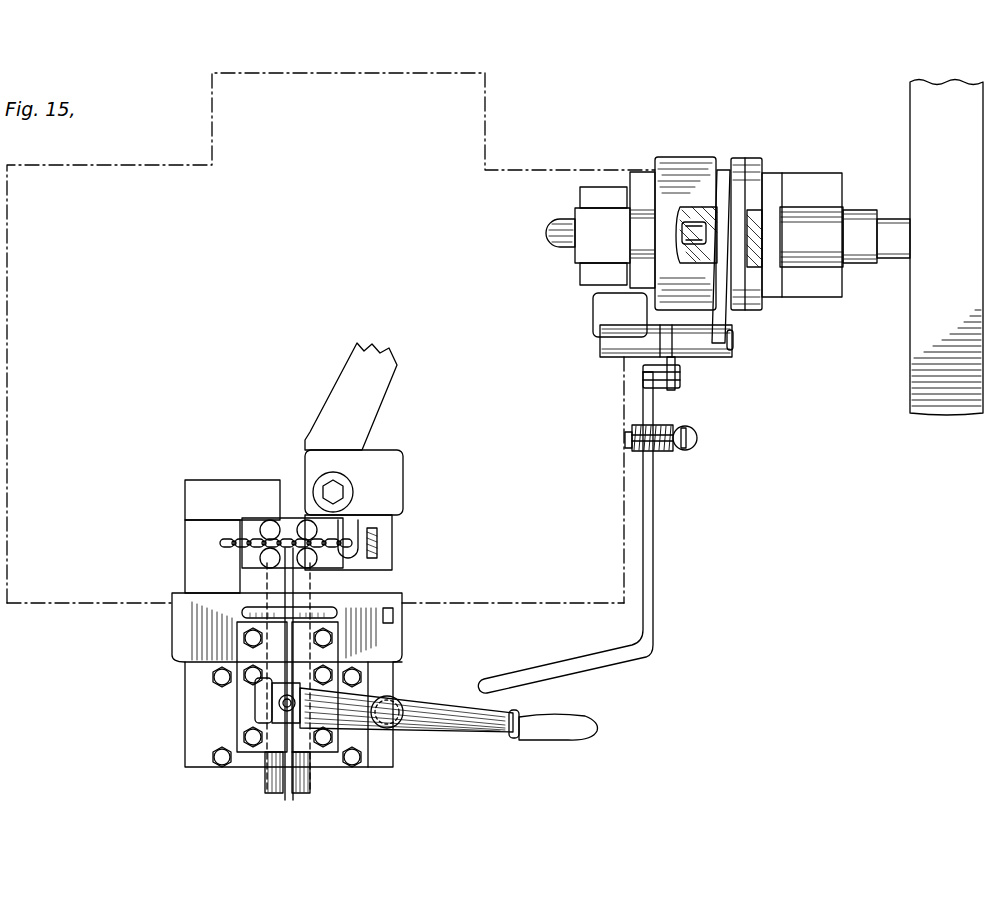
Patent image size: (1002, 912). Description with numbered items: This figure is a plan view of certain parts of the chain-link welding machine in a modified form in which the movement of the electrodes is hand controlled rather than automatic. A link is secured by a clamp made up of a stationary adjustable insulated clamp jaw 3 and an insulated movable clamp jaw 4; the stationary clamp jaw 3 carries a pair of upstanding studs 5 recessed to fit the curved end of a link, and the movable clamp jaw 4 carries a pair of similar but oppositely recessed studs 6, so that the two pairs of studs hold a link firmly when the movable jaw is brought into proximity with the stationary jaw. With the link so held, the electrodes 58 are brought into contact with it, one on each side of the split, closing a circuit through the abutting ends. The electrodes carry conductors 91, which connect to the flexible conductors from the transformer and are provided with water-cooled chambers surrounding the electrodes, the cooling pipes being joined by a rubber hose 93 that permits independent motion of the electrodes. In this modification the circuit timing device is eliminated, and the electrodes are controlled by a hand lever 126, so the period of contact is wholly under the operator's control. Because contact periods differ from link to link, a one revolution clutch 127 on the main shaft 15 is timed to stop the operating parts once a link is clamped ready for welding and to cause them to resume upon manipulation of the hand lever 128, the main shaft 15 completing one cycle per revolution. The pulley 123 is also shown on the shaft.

The stationary adjustable insulated clamp jaw 3 is at (241, 529).
The insulated movable clamp jaw 4 is at (285, 533).
The upstanding studs 5 is at (268, 529).
The studs 6 is at (313, 529).
The electrodes 58 is at (270, 563).
The conductors 91 is at (247, 598).
The rubber hose 93 is at (247, 594).
The pulley 123 is at (923, 103).
The main shaft 15 is at (890, 221).
The one revolution clutch 127 is at (693, 165).
The hand lever 128 is at (654, 549).
The hand lever 126 is at (481, 728).